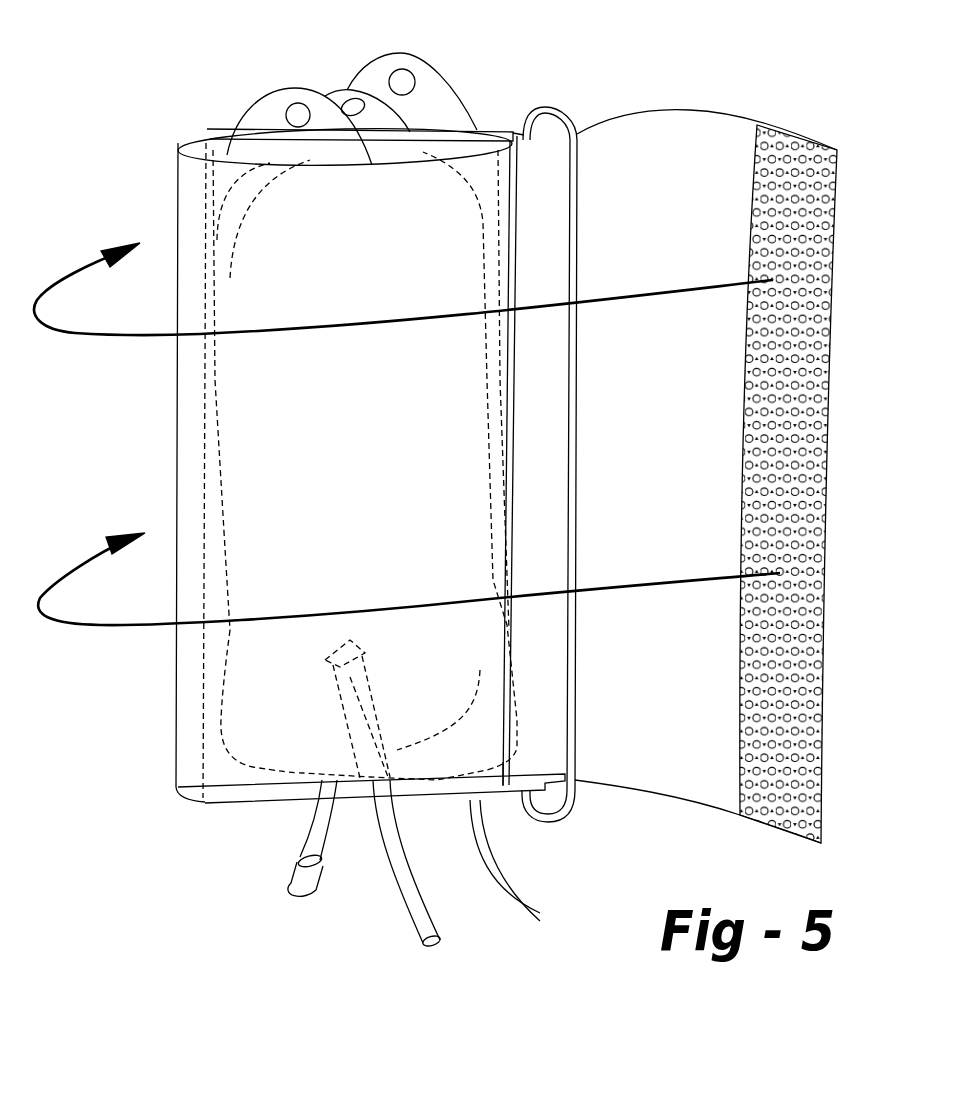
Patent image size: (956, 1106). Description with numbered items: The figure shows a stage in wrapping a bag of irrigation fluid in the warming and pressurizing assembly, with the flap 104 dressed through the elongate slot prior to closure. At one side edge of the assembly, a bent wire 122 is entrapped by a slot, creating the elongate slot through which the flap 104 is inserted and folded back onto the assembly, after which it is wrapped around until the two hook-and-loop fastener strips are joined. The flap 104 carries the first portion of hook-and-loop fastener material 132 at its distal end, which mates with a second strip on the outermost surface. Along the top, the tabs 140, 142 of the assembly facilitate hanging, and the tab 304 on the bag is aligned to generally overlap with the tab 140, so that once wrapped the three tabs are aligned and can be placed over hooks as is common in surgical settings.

The flap 104 is at (657, 130).
The bent wire 122 is at (542, 103).
The hook-and-loop fastener material 132 is at (780, 130).
The tab 140 is at (400, 60).
The tab 142 is at (263, 107).
The tab 304 is at (337, 93).